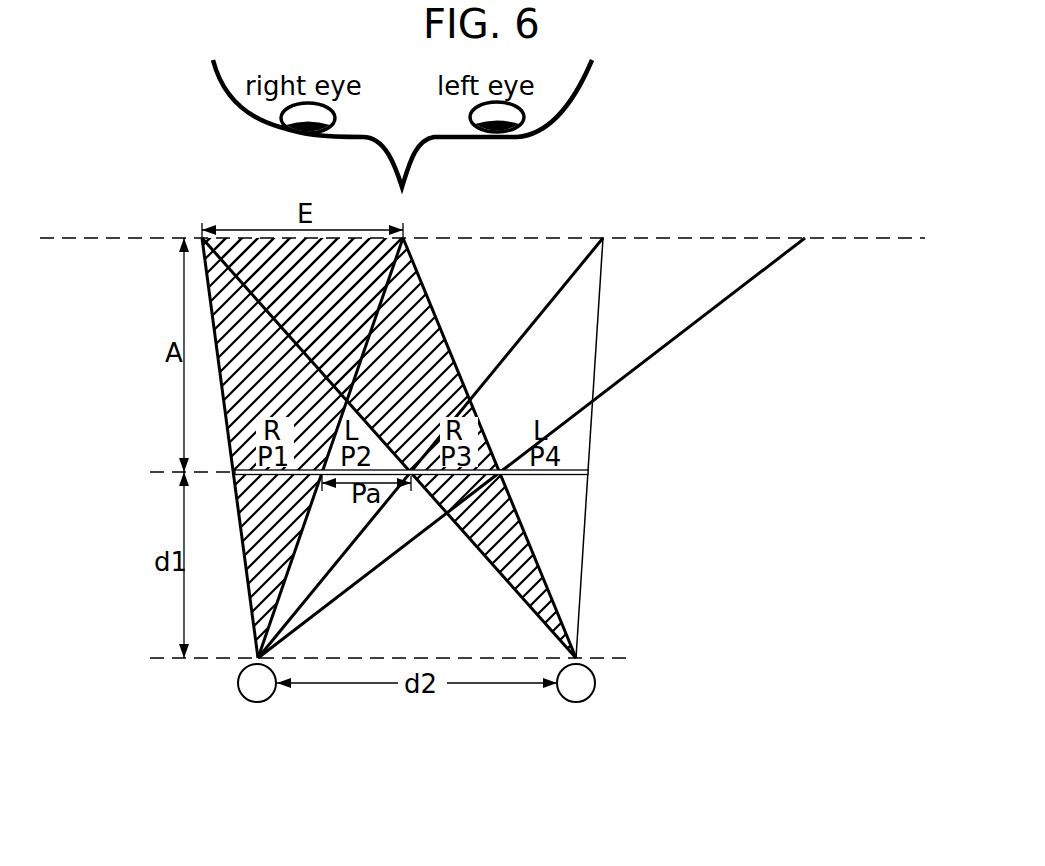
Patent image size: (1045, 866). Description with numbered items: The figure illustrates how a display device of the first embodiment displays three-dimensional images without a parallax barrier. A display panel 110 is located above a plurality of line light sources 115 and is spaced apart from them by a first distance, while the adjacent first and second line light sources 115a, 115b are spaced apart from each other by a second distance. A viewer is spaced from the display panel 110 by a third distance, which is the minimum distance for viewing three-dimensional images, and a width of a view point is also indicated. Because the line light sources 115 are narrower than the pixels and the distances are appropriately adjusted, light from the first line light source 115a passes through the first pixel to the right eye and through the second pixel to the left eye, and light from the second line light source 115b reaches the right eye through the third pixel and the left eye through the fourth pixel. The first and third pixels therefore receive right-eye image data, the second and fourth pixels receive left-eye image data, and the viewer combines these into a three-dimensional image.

The display panel 110 is at (574, 470).
The line light sources 115 is at (445, 756).
The first line light source 115a is at (257, 687).
The second line light source 115b is at (605, 724).